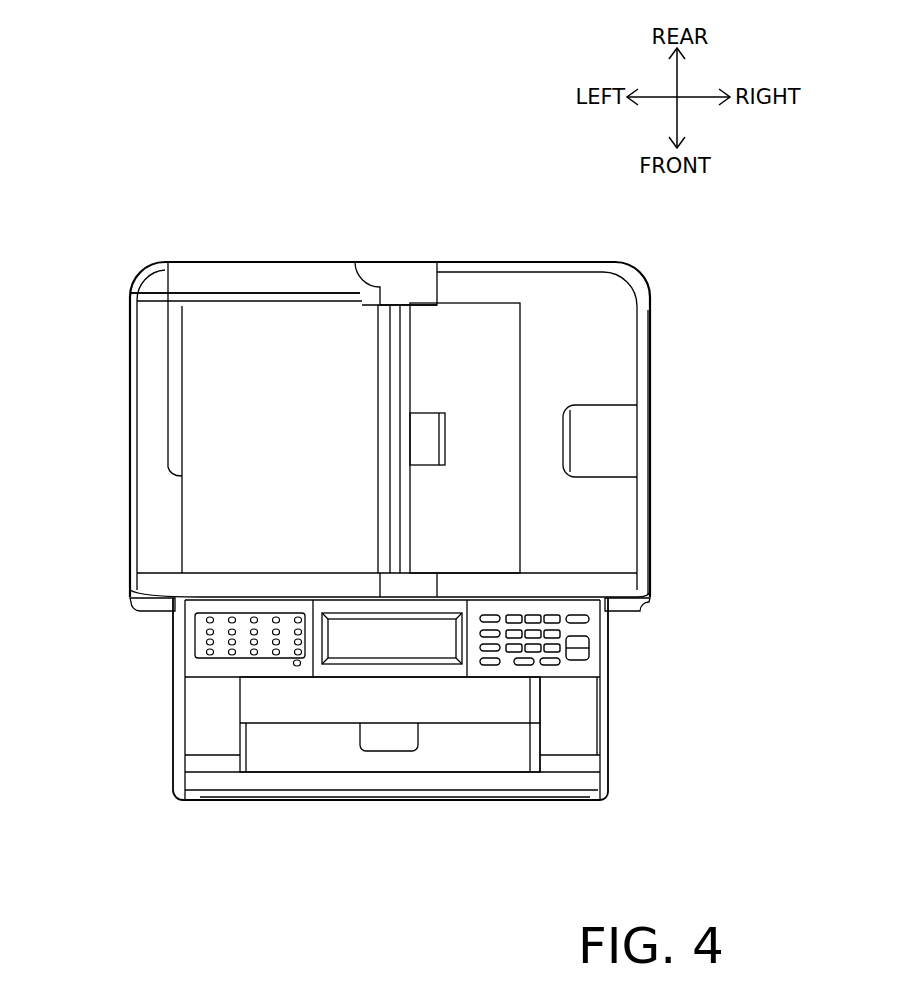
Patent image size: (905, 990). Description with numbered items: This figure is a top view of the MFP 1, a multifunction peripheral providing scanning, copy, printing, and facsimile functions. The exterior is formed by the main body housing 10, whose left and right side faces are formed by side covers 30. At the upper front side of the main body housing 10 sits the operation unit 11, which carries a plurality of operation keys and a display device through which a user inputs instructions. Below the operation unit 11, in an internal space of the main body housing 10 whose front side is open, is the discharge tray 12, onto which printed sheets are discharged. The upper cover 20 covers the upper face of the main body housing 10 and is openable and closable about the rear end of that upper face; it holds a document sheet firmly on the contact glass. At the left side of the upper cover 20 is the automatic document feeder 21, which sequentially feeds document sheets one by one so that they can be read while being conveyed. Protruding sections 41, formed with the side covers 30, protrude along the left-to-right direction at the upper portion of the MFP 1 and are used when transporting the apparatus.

The MFP 1 is at (118, 213).
The main body housing 10 is at (588, 782).
The operation unit 11 is at (288, 663).
The discharge tray 12 is at (443, 690).
The upper cover 20 is at (648, 330).
The automatic document feeder 21 is at (236, 367).
The side cover 30 is at (178, 703).
The protruding section 41 is at (150, 628).